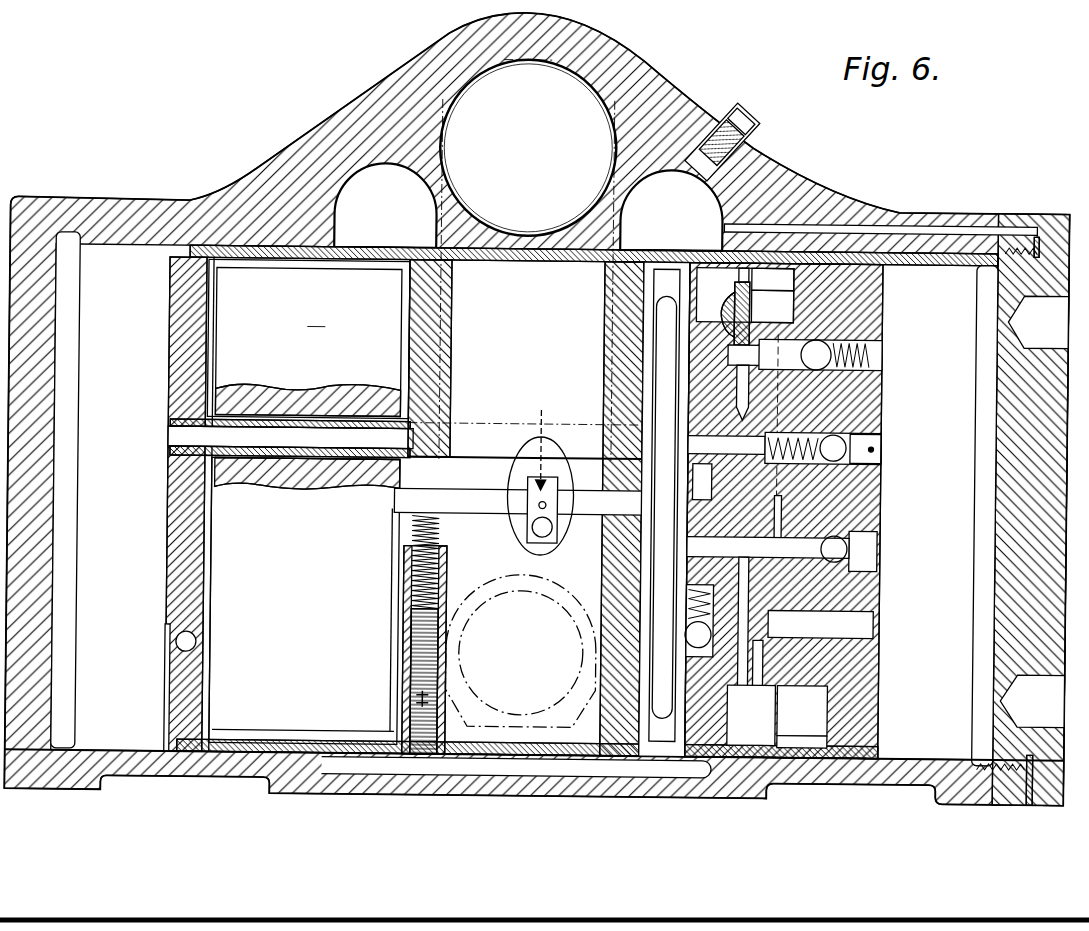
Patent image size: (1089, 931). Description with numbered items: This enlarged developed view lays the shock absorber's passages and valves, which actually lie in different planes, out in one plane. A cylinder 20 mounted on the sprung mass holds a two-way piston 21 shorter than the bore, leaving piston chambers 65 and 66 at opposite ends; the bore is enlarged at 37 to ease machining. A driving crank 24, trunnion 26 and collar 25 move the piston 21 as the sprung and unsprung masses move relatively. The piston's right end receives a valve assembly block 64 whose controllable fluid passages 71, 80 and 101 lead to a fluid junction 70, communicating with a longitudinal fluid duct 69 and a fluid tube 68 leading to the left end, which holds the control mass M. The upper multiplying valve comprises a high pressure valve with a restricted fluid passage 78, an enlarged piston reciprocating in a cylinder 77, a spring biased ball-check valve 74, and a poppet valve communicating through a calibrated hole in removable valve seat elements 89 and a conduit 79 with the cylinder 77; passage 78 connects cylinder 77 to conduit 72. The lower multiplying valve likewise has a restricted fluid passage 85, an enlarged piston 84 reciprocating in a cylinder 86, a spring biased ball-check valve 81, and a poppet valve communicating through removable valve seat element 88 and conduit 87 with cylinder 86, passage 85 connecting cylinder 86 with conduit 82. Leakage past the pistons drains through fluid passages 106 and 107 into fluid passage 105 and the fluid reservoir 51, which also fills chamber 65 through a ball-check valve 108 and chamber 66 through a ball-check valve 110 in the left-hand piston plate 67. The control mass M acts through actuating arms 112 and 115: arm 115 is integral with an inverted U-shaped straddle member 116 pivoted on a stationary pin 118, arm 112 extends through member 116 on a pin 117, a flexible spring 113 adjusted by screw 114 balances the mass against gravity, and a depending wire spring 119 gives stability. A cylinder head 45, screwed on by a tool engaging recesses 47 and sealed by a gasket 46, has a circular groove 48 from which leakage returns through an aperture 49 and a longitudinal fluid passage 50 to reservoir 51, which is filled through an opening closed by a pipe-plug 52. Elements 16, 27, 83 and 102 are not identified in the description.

The cylinder 20 is at (100, 203).
The two-way piston 21 is at (205, 250).
The enlarged bore end 37 is at (66, 238).
The longitudinal fluid passage 50 is at (903, 226).
The fluid reservoir 51 is at (662, 221).
The pipe-plug 52 is at (742, 132).
The gasket 46 is at (1037, 240).
The circular groove 48 is at (1022, 248).
The aperture 49 is at (1008, 250).
The recesses 47 is at (1034, 512).
The cylinder head 45 is at (996, 436).
The piston chamber 65 is at (930, 393).
The piston chamber 66 is at (116, 400).
The left-hand piston plate 67 is at (168, 265).
The fluid tube 68 is at (170, 449).
The control mass M is at (308, 338).
The ball-check valve 110 is at (178, 641).
The flexible spring 113 is at (445, 540).
The adjustable screw 114 is at (405, 657).
The control arm 112 is at (594, 491).
The longitudinal fluid duct 69 is at (551, 490).
The pin 117 is at (540, 508).
The depending wire spring 119 is at (525, 482).
The inverted U-shaped straddle member 116 is at (558, 450).
The stationary pin 118 is at (544, 542).
The actuating arm 115 is at (596, 512).
The trunnion 26 is at (520, 652).
The driving crank 24 is at (521, 651).
The collar 25 is at (515, 747).
The cylinder wall 27 is at (580, 744).
The conduit 87 is at (533, 760).
The removable valve seat element 88 is at (516, 769).
The removable valve seat elements 89 is at (664, 262).
The conduit 79 is at (708, 262).
The cylinder 77 is at (760, 284).
The block 16 is at (761, 311).
The restricted fluid passage 78 is at (735, 284).
The spring biased ball-check valve 74 is at (828, 336).
The conduit 72 is at (786, 370).
The fluid junction 70 is at (692, 393).
The controllable fluid passage 71 is at (748, 404).
The valve assembly block 64 is at (835, 403).
The controllable fluid passage 101 is at (722, 450).
The piston 102 is at (820, 463).
The controllable fluid passage 80 is at (714, 492).
The fluid passage 106 is at (783, 508).
The ball-check valve 108 is at (862, 528).
The fluid passage 105 is at (768, 549).
The fluid passage 107 is at (751, 610).
The bar 83 is at (821, 613).
The spring biased ball-check valve 81 is at (714, 635).
The conduit 82 is at (718, 665).
The enlarged piston 84 is at (795, 718).
The restricted fluid passage 85 is at (751, 717).
The cylinder 86 is at (802, 739).